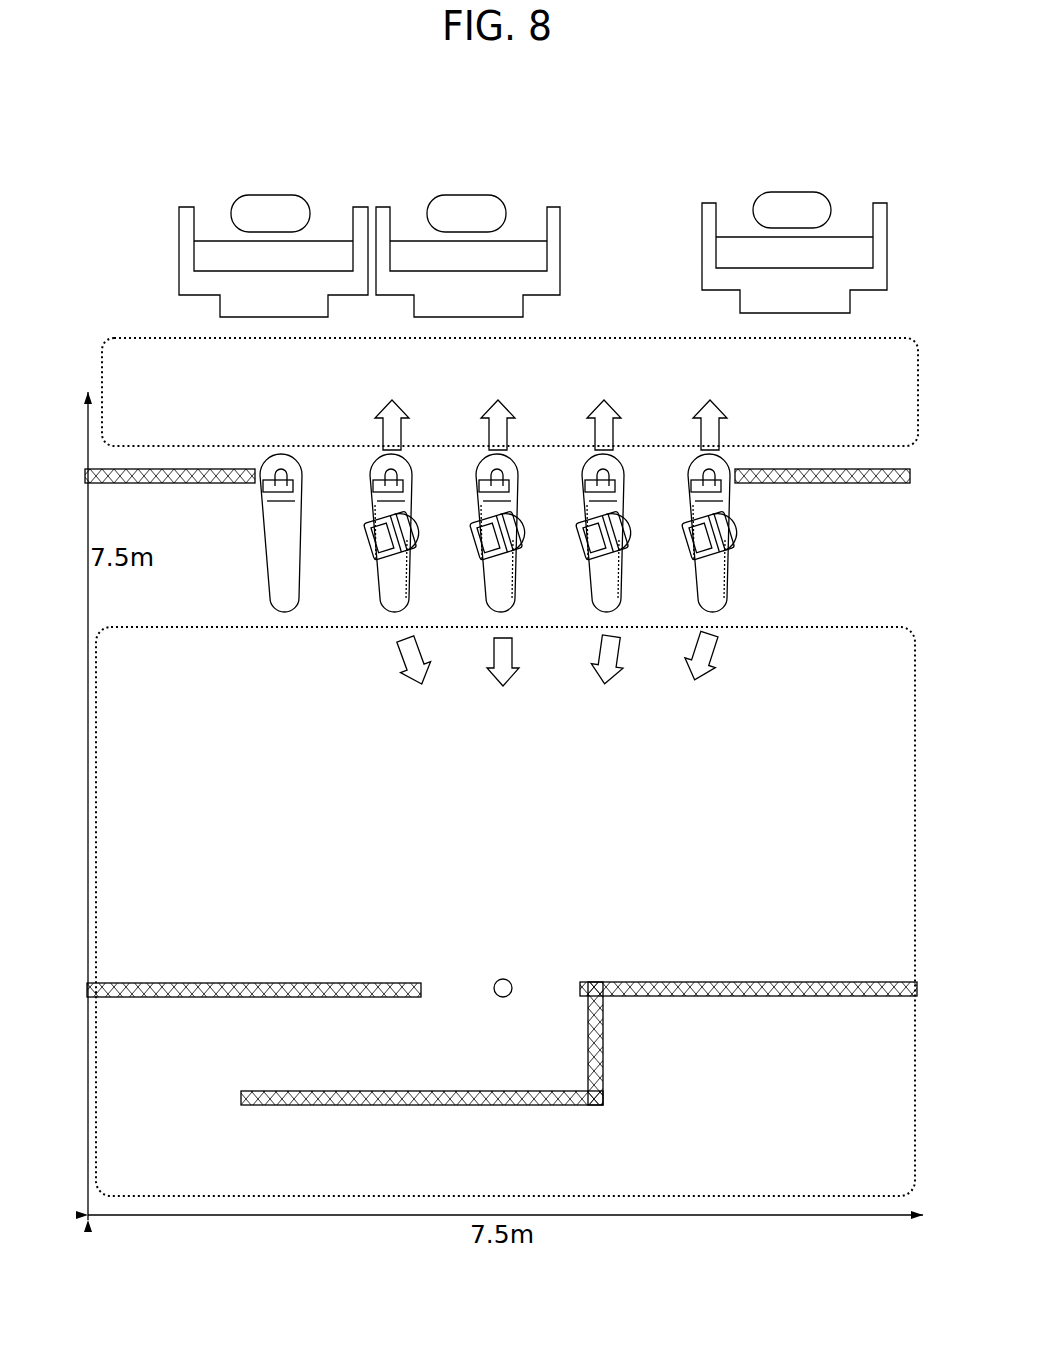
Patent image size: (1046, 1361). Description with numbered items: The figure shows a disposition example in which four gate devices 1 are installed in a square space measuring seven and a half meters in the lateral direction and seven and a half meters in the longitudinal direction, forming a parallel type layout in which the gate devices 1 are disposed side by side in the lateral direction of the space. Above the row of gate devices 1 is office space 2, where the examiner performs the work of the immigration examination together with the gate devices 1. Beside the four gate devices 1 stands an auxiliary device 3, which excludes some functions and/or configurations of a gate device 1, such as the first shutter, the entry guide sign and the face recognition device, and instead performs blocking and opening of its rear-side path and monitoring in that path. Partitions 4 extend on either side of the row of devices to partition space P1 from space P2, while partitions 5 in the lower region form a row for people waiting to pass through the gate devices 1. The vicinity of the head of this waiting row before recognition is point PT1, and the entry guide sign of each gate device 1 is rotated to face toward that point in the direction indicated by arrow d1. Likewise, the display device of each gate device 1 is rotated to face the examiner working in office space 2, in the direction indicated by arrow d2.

The gate device 1 is at (376, 583).
The office space 2 is at (325, 182).
The auxiliary device 3 is at (266, 583).
The partition 4 is at (158, 486).
The partition 5 is at (318, 983).
The space P1 is at (862, 627).
The space P2 is at (125, 338).
The point PT1 is at (502, 970).
The arrow d1 is at (543, 659).
The arrow d2 is at (535, 425).